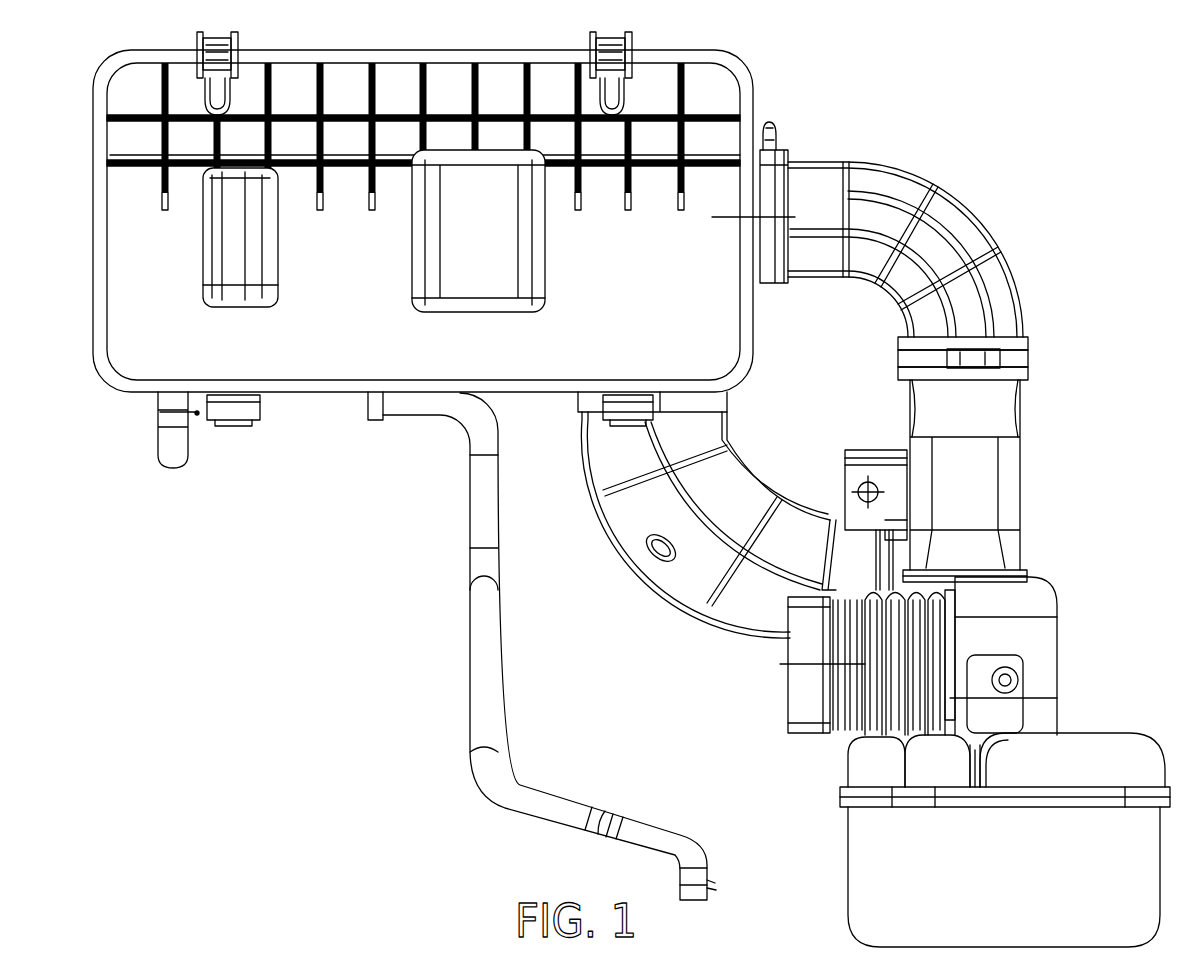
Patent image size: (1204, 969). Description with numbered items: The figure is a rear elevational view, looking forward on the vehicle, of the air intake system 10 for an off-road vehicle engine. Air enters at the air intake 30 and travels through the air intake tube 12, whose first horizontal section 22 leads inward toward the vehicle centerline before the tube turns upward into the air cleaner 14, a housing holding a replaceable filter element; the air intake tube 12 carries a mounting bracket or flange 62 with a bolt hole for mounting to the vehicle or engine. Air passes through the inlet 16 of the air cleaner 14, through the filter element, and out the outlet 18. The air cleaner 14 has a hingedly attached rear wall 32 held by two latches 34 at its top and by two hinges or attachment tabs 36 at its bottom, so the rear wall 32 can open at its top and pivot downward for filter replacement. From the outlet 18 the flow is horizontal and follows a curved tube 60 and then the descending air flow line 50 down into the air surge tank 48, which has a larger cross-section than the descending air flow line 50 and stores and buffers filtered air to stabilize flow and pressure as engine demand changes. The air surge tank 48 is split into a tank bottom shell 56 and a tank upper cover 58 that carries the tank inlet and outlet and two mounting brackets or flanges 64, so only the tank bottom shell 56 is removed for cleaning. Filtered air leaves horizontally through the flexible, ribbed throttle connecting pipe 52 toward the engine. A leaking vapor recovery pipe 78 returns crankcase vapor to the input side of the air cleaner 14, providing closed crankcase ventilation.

The air intake system 10 is at (806, 132).
The air intake tube 12 is at (599, 536).
The air cleaner 14 is at (435, 288).
The inlet 16 is at (723, 397).
The outlet 18 is at (756, 278).
The first horizontal section 22 is at (858, 556).
The air intake 30 is at (900, 557).
The rear wall 32 is at (140, 347).
The latch 34 is at (236, 46).
The hinge or attachment tab 36 is at (232, 421).
The air surge tank 48 is at (994, 762).
The descending air flow line 50 is at (984, 420).
The throttle connecting pipe 52 is at (893, 683).
The tank bottom shell 56 is at (880, 903).
The tank upper cover 58 is at (1132, 757).
The curved tube 60 is at (902, 216).
The mounting bracket or flange 62 is at (842, 463).
The mounting bracket or flange 64 is at (1012, 713).
The leaking vapor recovery pipe 78 is at (468, 714).